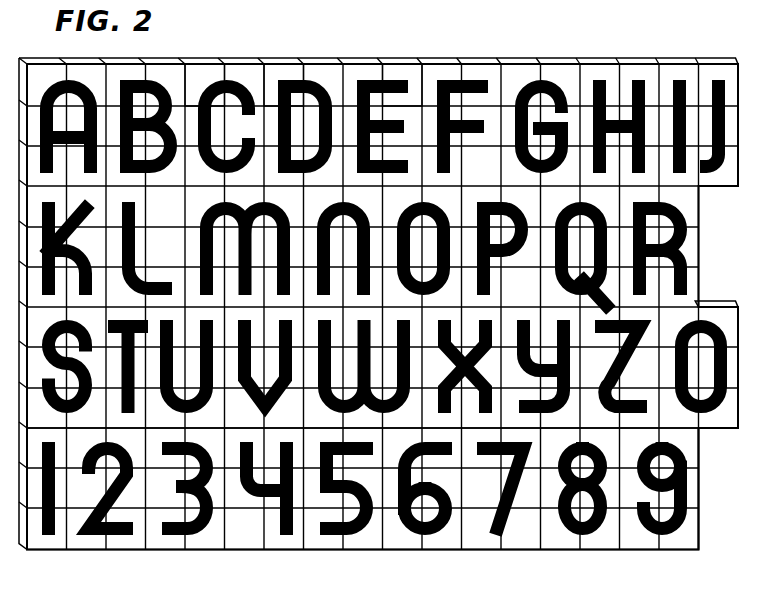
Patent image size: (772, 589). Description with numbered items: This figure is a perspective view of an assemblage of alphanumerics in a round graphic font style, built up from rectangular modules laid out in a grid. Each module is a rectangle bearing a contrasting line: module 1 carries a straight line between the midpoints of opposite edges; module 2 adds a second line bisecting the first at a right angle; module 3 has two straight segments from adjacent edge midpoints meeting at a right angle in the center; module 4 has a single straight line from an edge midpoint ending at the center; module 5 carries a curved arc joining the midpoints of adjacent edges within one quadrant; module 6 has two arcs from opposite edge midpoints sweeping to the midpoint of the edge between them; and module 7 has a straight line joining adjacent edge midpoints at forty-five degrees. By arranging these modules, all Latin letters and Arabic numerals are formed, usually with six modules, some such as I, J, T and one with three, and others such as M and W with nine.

The module 1 is at (26, 484).
The module 2 is at (695, 488).
The module 3 is at (280, 62).
The module 4 is at (398, 62).
The module 5 is at (200, 62).
The module 6 is at (693, 250).
The module 7 is at (240, 421).